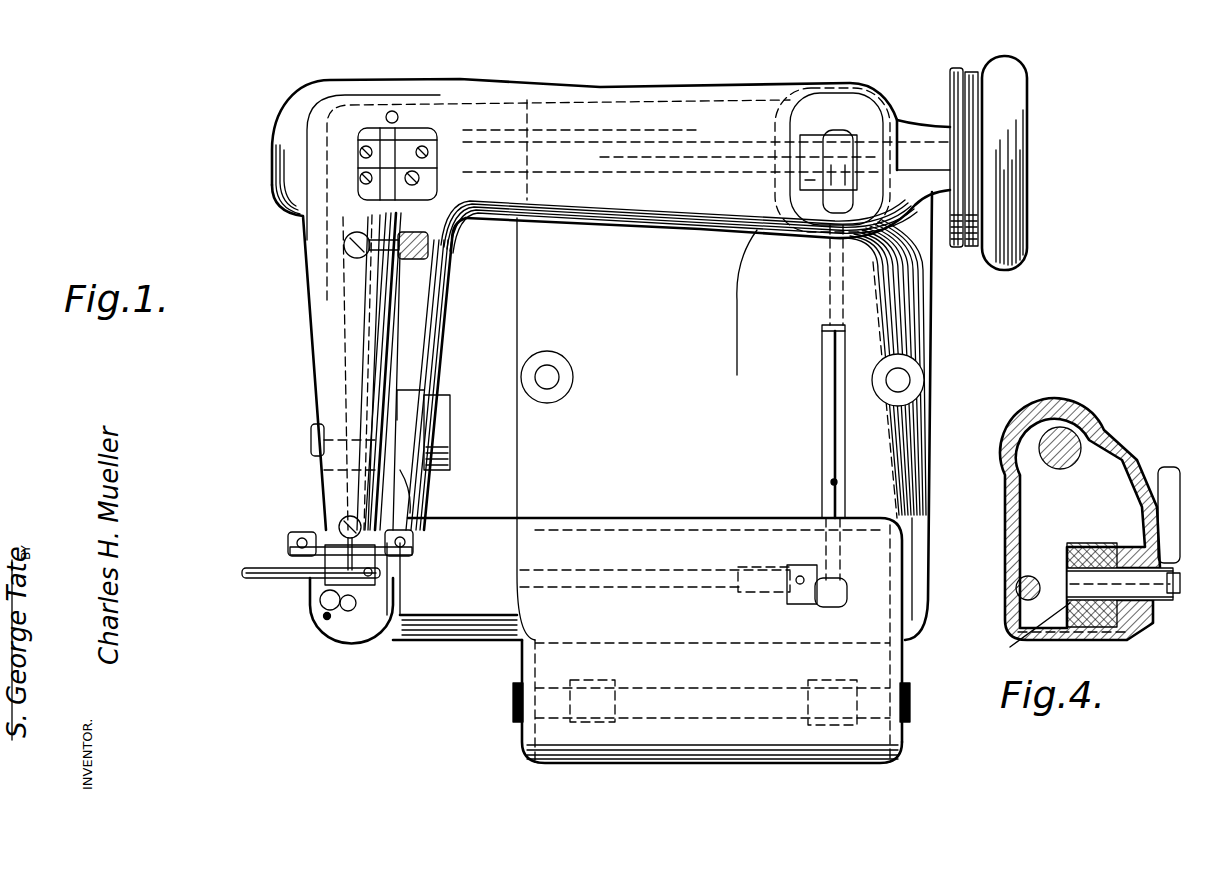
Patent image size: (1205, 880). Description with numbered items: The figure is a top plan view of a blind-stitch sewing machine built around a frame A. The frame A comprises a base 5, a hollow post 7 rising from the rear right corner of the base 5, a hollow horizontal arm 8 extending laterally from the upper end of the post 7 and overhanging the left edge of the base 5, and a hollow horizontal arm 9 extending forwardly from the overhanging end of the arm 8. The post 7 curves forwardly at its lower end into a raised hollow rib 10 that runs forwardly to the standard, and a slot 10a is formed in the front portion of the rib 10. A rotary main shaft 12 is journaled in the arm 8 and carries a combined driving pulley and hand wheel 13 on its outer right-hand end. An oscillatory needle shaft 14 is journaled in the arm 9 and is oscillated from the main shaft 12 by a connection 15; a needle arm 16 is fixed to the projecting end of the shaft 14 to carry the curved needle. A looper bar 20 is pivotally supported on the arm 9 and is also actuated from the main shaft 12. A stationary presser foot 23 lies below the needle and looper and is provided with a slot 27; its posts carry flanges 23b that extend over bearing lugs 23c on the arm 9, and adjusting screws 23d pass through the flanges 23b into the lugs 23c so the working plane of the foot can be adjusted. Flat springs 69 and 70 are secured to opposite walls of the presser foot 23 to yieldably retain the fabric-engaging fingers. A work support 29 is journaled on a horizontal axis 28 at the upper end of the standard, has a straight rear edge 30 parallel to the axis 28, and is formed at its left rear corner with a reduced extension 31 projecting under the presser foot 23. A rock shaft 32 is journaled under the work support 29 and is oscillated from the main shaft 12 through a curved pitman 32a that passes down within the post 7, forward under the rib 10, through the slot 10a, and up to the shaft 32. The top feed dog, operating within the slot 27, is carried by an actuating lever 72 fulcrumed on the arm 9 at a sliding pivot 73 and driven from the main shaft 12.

In FIG. 1, the base 5 is at (530, 305).
In FIG. 1, the post 7 is at (753, 261).
In FIG. 1, the horizontal arm 8 is at (668, 104).
In FIG. 1, the horizontal arm 9 is at (332, 323).
In FIG. 4, the horizontal arm 9 is at (1033, 413).
In FIG. 1, the rib like structure 10 is at (889, 416).
In FIG. 1, the slot 10a is at (834, 482).
In FIG. 1, the rotary main shaft 12 is at (553, 143).
In FIG. 1, the combined driving pulley and hand wheel 13 is at (1010, 98).
In FIG. 1, the oscillatory needle shaft 14 is at (340, 281).
In FIG. 4, the oscillatory needle shaft 14 is at (1063, 470).
In FIG. 1, the connection 15 is at (412, 147).
In FIG. 1, the needle arm 16 is at (282, 570).
In FIG. 4, the looper bar 20 is at (1032, 577).
In FIG. 1, the presser foot 23 is at (365, 624).
In FIG. 1, the flanges 23b is at (293, 528).
In FIG. 1, the bearing lugs 23c is at (423, 512).
In FIG. 1, the adjusting screws 23d is at (309, 528).
In FIG. 1, the slot 27 is at (340, 612).
In FIG. 1, the horizontal axis 28 is at (710, 717).
In FIG. 1, the work support 29 is at (607, 519).
In FIG. 1, the straight rear edge 30 is at (713, 520).
In FIG. 1, the reduced extension 31 is at (445, 607).
In FIG. 1, the rock shaft 32 is at (617, 582).
In FIG. 1, the curved pitman 32a is at (833, 430).
In FIG. 1, the flat spring 69 is at (415, 558).
In FIG. 1, the flat spring 70 is at (312, 597).
In FIG. 4, the actuating lever 72 is at (1087, 546).
In FIG. 4, the sliding pivot 73 is at (1030, 636).
In FIG. 1, the frame A is at (546, 439).